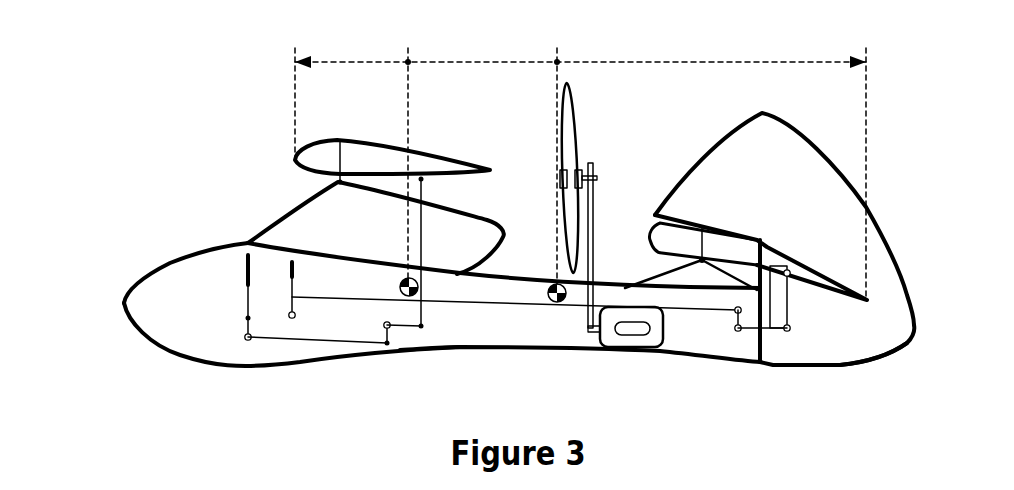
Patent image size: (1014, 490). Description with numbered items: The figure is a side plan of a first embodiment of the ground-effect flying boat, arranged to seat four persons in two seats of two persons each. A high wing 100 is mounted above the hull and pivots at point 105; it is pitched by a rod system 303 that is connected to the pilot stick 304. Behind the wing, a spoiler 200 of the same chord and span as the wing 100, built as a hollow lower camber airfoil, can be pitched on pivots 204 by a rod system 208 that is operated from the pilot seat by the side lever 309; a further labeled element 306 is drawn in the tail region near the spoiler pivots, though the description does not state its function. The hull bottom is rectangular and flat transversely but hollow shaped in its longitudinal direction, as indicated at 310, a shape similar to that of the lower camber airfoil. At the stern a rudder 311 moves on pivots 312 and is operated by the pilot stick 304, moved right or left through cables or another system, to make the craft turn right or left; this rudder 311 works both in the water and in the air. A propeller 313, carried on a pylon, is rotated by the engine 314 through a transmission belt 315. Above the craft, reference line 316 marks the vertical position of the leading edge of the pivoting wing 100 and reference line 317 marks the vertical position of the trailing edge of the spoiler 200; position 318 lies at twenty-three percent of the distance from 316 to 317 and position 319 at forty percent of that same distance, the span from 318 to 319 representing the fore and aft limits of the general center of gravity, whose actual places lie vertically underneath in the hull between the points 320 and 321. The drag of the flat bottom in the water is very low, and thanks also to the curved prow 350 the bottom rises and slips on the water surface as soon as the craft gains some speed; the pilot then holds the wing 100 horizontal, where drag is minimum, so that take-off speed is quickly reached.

The high wing 100 is at (295, 160).
The pivot point 105 is at (335, 184).
The spoiler 200 is at (653, 215).
The pivots 204 is at (700, 266).
The rod system 208 is at (788, 317).
The rod system 303 is at (385, 328).
The pilot stick 304 is at (245, 266).
The horizontal stabilizer 306 is at (718, 247).
The side lever 309 is at (288, 272).
The hull bottom 310 is at (443, 352).
The rudder 311 is at (882, 352).
The pivots 312 is at (762, 363).
The propeller 313 is at (567, 108).
The engine 314 is at (627, 331).
The transmission belt 315 is at (588, 316).
The vertical position of the leading edge of the pivoting wing 316 is at (295, 62).
The vertical position of the trailing edge of the spoiler 317 is at (866, 62).
The position at 23% of the distance from 316 to 317 318 is at (408, 62).
The position at 40% of the distance from 316 to 317 319 is at (557, 62).
The center of gravity point 320 is at (405, 297).
The center of gravity point 321 is at (548, 300).
The curved prow 350 is at (124, 303).